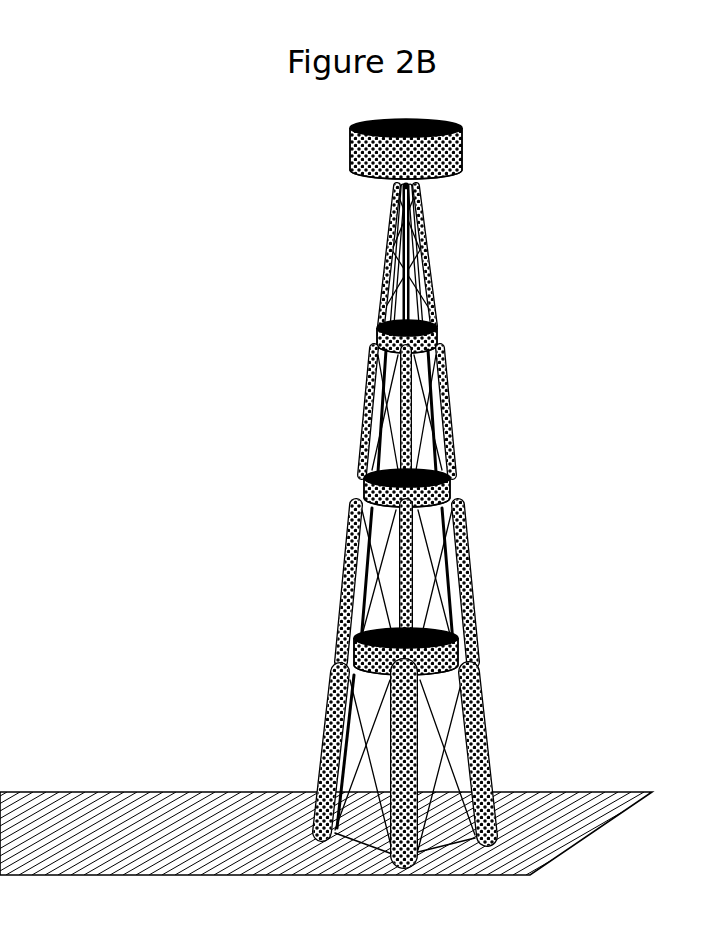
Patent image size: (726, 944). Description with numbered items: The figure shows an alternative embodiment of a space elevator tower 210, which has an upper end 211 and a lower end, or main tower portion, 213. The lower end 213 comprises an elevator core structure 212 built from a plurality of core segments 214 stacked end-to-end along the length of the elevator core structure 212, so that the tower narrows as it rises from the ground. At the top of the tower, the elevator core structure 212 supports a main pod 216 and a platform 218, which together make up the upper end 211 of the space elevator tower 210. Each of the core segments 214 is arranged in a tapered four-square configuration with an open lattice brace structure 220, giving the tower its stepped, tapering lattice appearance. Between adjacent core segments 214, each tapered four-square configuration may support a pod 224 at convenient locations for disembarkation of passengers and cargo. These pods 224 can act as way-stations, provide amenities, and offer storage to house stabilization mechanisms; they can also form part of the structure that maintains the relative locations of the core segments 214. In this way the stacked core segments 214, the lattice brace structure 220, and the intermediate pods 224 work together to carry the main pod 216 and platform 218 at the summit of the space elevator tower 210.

The space elevator tower 210 is at (218, 105).
The upper end 211 is at (333, 124).
The elevator core structure 212 is at (468, 408).
The lower end (main tower portion) 213 is at (302, 180).
The core segments 214 is at (438, 273).
The main pod 216 is at (428, 157).
The platform 218 is at (440, 122).
The open lattice brace structure 220 is at (449, 570).
The pod 224 is at (444, 335).